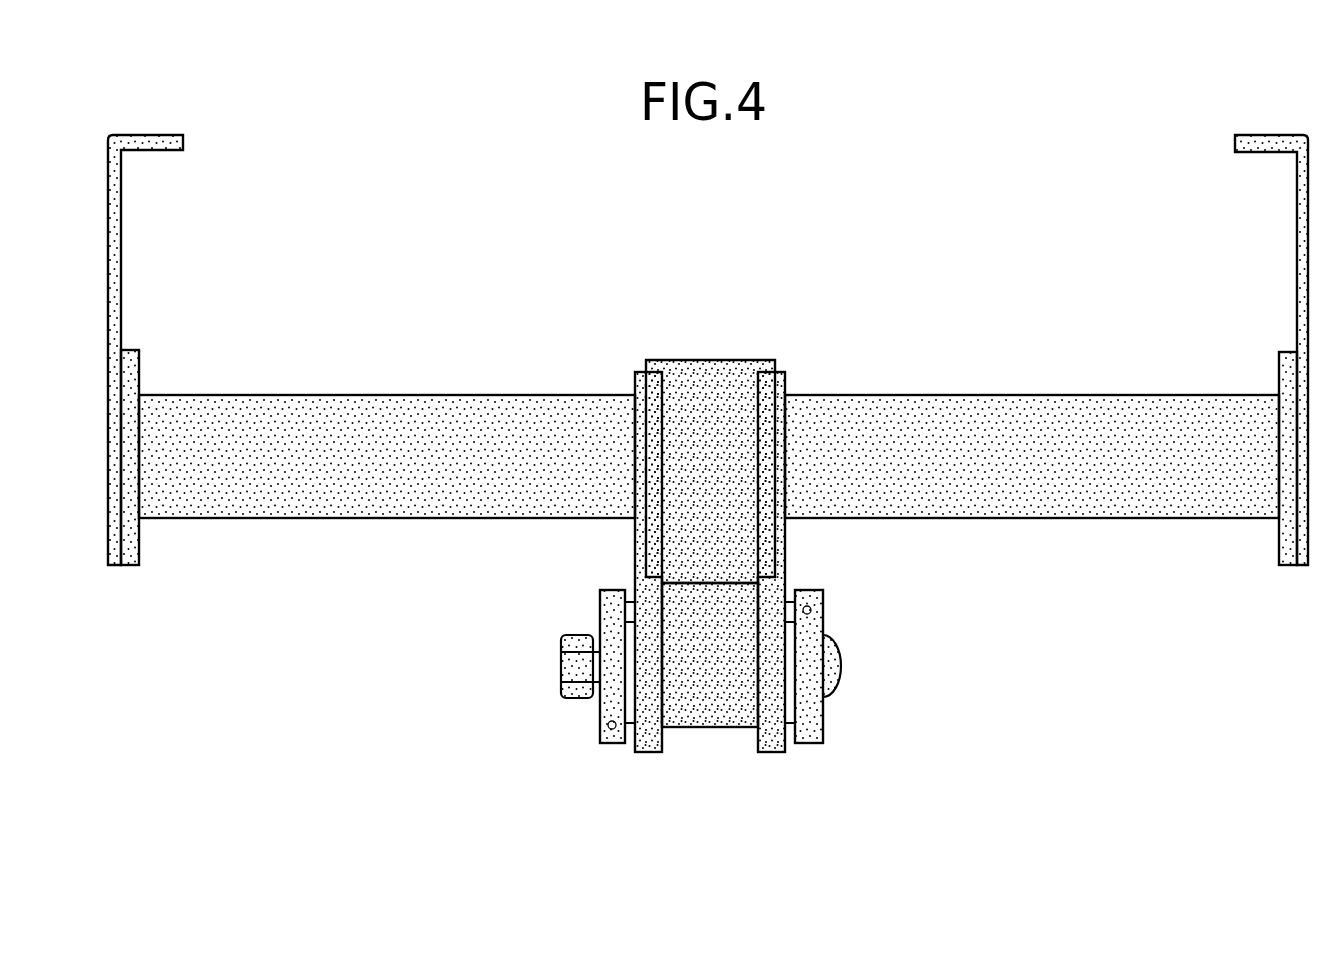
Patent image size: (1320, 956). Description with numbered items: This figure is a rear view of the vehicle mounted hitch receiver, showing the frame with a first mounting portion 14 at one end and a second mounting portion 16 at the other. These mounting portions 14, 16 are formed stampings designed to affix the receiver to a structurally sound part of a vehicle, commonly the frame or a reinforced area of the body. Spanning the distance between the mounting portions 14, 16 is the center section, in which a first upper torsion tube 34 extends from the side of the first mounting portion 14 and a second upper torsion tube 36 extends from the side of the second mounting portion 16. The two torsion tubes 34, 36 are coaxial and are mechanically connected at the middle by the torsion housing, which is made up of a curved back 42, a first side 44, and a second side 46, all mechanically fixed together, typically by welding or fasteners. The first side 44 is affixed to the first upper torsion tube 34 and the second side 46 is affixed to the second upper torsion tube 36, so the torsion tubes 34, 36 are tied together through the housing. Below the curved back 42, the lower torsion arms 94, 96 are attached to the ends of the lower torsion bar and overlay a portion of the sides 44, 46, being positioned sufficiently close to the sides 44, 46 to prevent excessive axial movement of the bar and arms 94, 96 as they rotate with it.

The first mounting portion 14 is at (1297, 248).
The second mounting portion 16 is at (122, 253).
The first upper torsion tube 34 is at (975, 393).
The second upper torsion tube 36 is at (390, 393).
The curved back 42 is at (730, 456).
The first side 44 is at (770, 753).
The second side 46 is at (648, 753).
The lower torsion arm 94 is at (813, 745).
The lower torsion arm 96 is at (615, 743).